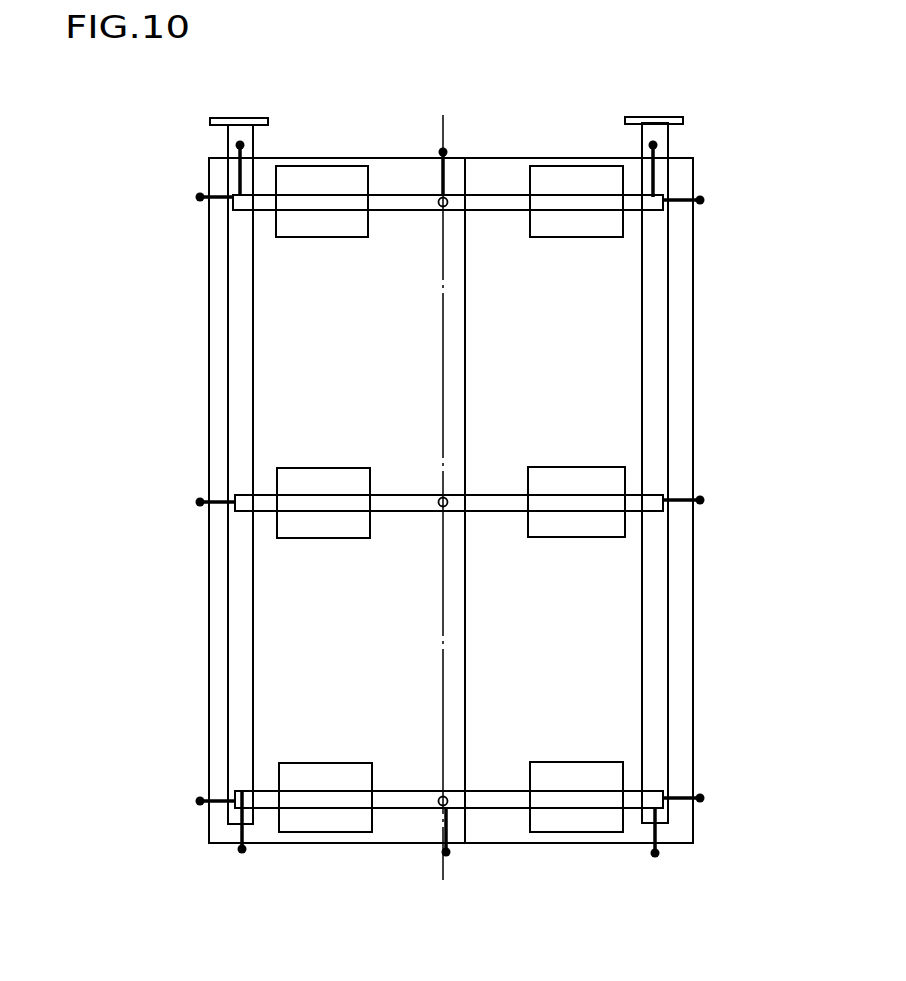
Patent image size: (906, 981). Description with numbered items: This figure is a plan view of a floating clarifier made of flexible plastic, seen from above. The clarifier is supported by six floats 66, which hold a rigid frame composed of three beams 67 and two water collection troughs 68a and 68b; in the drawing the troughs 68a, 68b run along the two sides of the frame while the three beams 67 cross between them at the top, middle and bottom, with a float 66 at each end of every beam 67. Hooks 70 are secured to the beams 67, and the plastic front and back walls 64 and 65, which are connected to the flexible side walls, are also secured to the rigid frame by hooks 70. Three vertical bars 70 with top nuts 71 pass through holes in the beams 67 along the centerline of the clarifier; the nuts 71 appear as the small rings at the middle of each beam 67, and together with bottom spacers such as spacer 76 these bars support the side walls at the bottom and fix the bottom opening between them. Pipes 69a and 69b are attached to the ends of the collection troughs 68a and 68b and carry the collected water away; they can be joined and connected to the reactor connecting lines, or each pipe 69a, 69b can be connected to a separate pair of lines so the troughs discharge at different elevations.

The front wall 64 is at (502, 158).
The back wall 65 is at (545, 845).
The floats 66 is at (347, 226).
The beams 67 is at (422, 200).
The water collection trough 68a is at (238, 381).
The water collection trough 68b is at (652, 313).
The pipe 69a is at (228, 118).
The pipe 69b is at (650, 118).
The hooks 70 is at (236, 146).
The top nuts 71 is at (447, 206).
The bottom spacer 76 is at (453, 0).